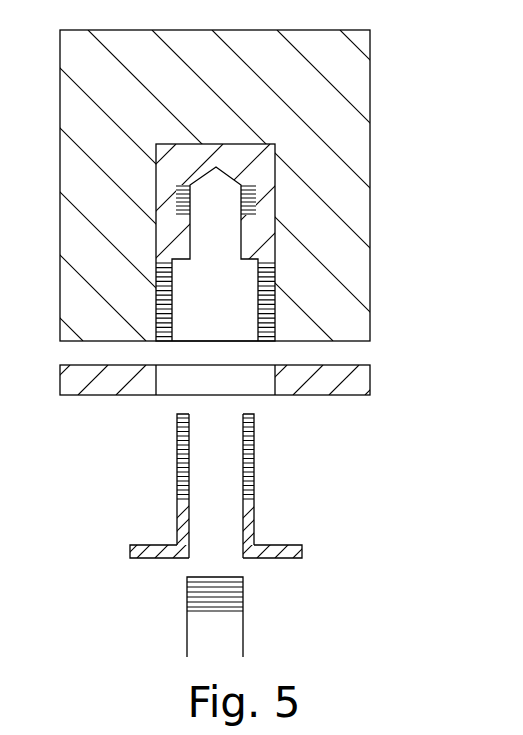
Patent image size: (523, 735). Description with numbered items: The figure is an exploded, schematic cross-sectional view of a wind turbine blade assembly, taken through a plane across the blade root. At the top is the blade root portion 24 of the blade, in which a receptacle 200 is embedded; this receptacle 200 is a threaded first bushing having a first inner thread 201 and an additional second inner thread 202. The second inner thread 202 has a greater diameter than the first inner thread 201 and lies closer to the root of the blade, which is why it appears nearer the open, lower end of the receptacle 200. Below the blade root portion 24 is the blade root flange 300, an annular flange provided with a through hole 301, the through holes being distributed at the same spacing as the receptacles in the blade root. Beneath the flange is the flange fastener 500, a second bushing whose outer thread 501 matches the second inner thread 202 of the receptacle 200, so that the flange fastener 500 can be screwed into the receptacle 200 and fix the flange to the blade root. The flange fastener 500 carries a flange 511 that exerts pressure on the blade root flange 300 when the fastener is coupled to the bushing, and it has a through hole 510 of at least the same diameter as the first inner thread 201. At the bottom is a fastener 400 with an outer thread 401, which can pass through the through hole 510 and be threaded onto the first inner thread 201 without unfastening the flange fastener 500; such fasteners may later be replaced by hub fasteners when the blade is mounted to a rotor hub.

The blade root portion 24 is at (357, 69).
The receptacle 200 is at (225, 167).
The first inner thread 201 is at (255, 205).
The second inner thread 202 is at (270, 290).
The blade root flange 300 is at (389, 372).
The through hole 301 is at (173, 386).
The flange fastener 500 is at (222, 516).
The outer thread 501 is at (253, 447).
The through hole 510 is at (213, 540).
The flange 511 is at (130, 548).
The fastener 400 is at (277, 629).
The outer thread 401 is at (243, 597).